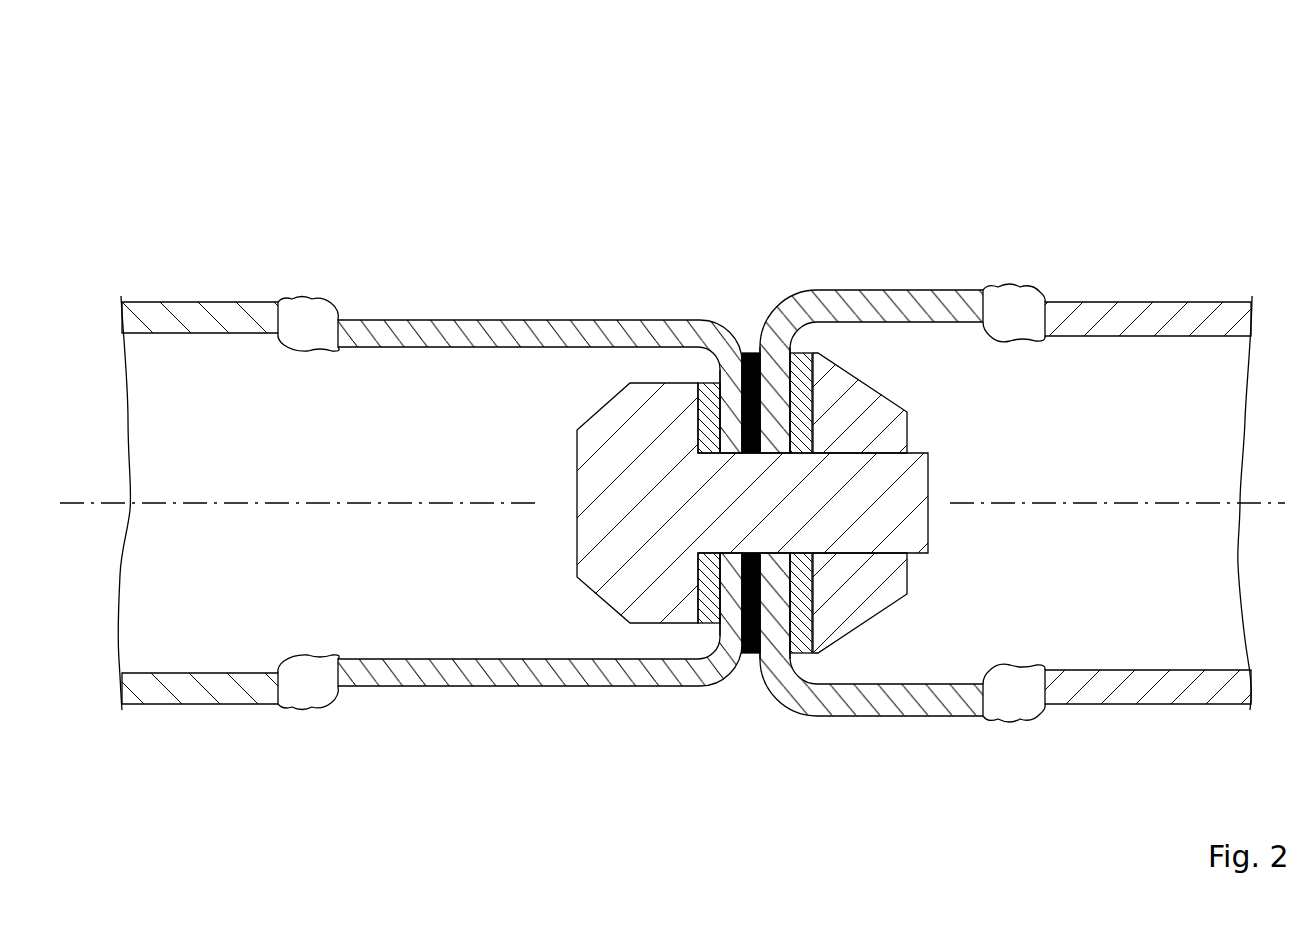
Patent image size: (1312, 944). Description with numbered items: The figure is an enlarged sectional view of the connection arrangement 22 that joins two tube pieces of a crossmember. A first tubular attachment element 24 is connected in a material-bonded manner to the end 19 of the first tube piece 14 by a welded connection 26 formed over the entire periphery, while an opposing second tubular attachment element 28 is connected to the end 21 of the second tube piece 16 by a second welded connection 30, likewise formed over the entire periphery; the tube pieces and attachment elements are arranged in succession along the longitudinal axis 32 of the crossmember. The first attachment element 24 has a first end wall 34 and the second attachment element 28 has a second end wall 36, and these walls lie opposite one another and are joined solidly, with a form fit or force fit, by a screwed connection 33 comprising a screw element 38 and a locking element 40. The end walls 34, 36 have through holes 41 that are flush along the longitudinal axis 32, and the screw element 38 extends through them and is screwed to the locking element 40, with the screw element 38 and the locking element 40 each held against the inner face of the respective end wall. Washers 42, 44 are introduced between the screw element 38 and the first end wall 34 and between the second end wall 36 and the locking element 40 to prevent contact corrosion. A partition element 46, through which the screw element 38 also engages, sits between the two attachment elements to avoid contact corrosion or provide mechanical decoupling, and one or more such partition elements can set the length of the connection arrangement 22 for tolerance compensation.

The first tube piece 14 is at (185, 315).
The second tube piece 16 is at (1157, 315).
The end of the first tube piece 19 is at (267, 300).
The end of the second tube piece 21 is at (1063, 300).
The connection arrangement 22 is at (695, 148).
The first tubular attachment element 24 is at (474, 318).
The welded connection 26 is at (315, 323).
The second tubular attachment element 28 is at (848, 307).
The second welded connection 30 is at (1013, 310).
The longitudinal axis 32 is at (88, 500).
The screwed connection 33 is at (768, 237).
The first end wall 34 is at (733, 355).
The second end wall 36 is at (767, 342).
The screw element 38 is at (603, 600).
The locking element 40 is at (867, 415).
The through holes 41 is at (722, 630).
The washer 42 is at (710, 390).
The washer 44 is at (800, 643).
The partition element 46 is at (749, 353).